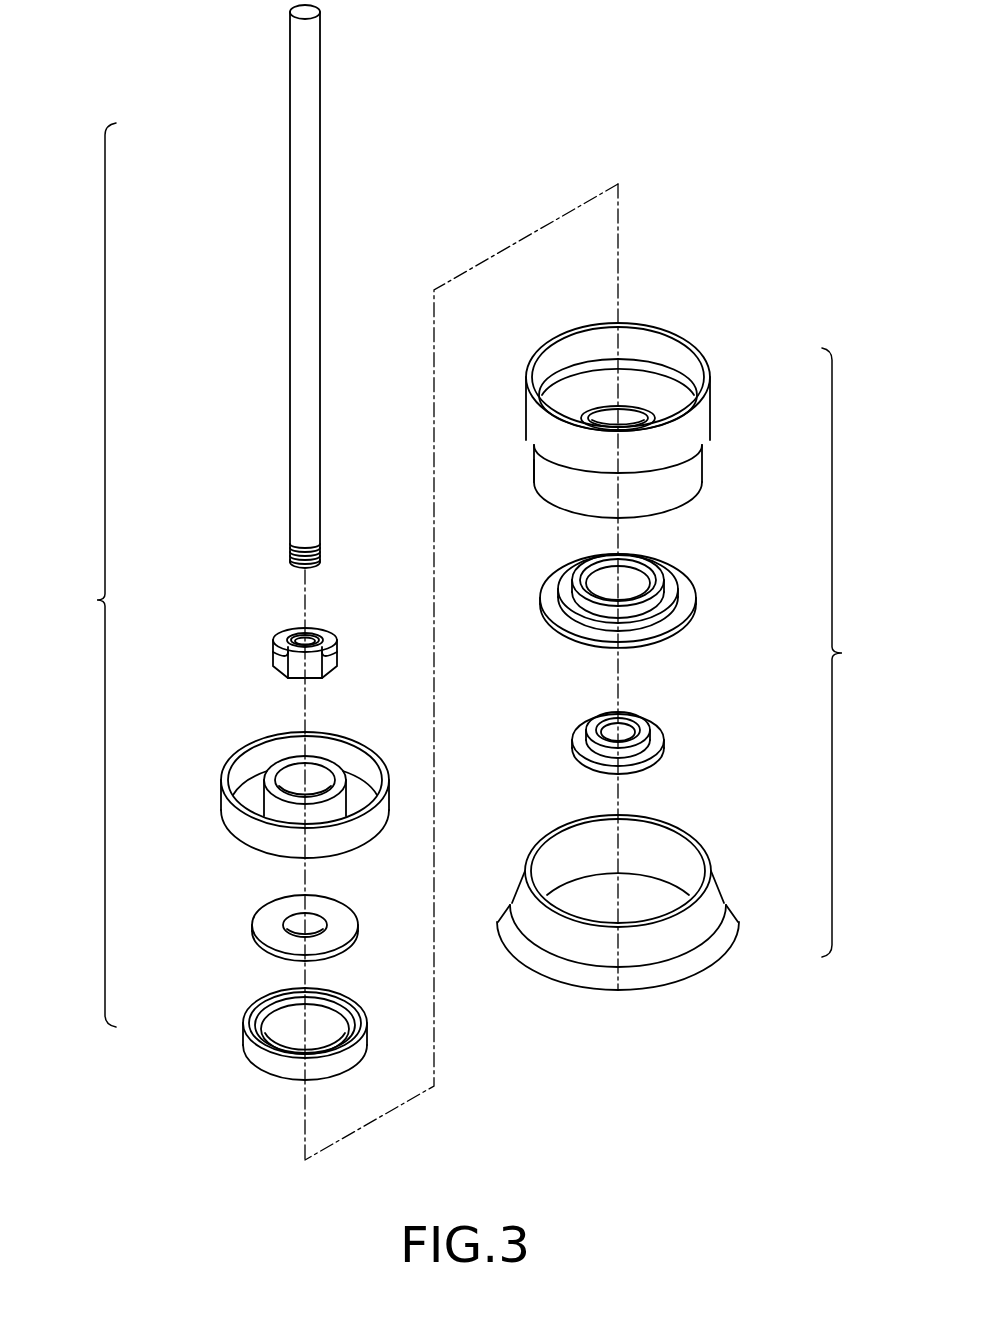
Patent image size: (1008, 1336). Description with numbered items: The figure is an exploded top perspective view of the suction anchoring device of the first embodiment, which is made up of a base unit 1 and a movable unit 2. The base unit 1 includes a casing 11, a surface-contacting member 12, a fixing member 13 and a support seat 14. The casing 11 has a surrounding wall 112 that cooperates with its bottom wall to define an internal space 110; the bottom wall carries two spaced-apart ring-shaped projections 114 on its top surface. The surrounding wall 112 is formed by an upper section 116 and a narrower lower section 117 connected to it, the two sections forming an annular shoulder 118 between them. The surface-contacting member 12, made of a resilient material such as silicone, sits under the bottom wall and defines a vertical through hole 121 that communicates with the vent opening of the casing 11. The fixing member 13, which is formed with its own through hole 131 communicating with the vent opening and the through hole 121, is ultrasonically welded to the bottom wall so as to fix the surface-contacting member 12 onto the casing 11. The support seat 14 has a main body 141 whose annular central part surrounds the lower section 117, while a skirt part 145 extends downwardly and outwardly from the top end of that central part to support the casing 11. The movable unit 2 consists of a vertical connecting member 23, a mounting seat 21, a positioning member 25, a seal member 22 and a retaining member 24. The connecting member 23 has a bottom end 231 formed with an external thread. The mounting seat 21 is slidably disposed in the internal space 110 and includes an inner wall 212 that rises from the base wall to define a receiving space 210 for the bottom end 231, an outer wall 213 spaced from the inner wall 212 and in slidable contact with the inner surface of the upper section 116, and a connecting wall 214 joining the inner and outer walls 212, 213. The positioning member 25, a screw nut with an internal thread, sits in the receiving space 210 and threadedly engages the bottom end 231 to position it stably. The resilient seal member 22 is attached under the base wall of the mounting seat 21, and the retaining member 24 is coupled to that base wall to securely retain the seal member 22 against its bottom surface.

The base unit 1 is at (845, 652).
The movable unit 2 is at (93, 575).
The casing 11 is at (625, 390).
The internal space 110 is at (642, 386).
The surrounding wall 112 is at (706, 468).
The ring-shaped projection 114 is at (611, 415).
The upper section 116 is at (536, 416).
The lower section 117 is at (546, 470).
The annular shoulder 118 is at (560, 386).
The surface-contacting member 12 is at (654, 582).
The through hole 121 is at (630, 582).
The fixing member 13 is at (662, 725).
The through hole 131 is at (630, 728).
The support seat 14 is at (637, 894).
The main body 141 is at (531, 866).
The skirt part 145 is at (696, 934).
The mounting seat 21 is at (275, 771).
The receiving space 210 is at (318, 786).
The inner wall 212 is at (256, 750).
The outer wall 213 is at (228, 818).
The connecting wall 214 is at (256, 778).
The seal member 22 is at (250, 1040).
The connecting member 23 is at (255, 286).
The bottom end 231 is at (296, 550).
The retaining member 24 is at (265, 927).
The positioning member 25 is at (276, 650).